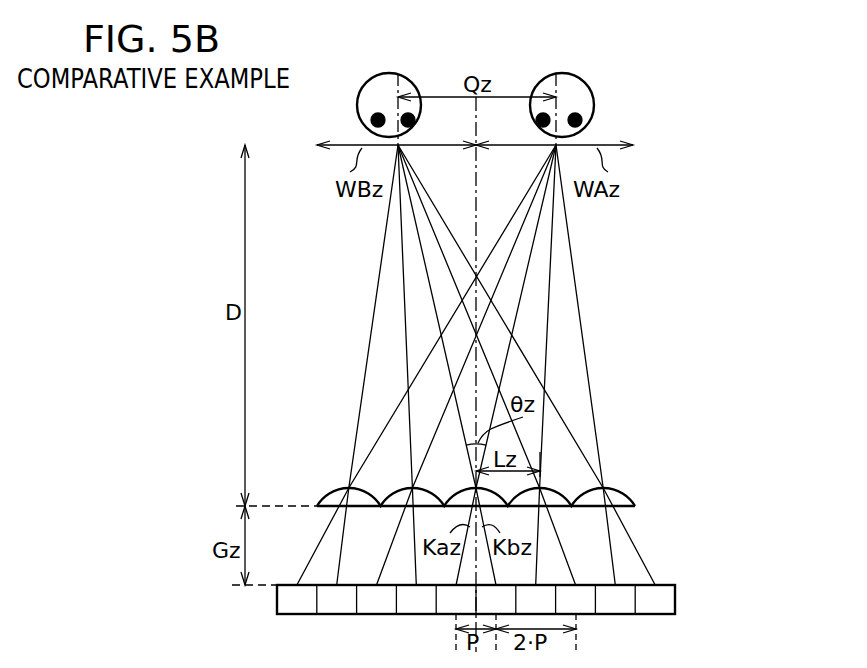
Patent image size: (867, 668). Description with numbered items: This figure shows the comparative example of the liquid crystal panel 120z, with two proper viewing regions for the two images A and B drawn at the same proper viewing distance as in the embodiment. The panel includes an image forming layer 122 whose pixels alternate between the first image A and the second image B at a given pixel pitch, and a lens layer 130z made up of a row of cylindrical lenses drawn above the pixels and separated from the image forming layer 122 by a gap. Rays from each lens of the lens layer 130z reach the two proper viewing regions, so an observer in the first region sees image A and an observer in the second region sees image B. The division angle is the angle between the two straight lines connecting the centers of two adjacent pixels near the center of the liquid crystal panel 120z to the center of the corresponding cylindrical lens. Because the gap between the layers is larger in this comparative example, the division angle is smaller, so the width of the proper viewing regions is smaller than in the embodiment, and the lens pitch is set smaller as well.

The microlens array 130z is at (686, 487).
The image forming layer 122 is at (686, 586).
The liquid crystal panel 120z is at (740, 570).